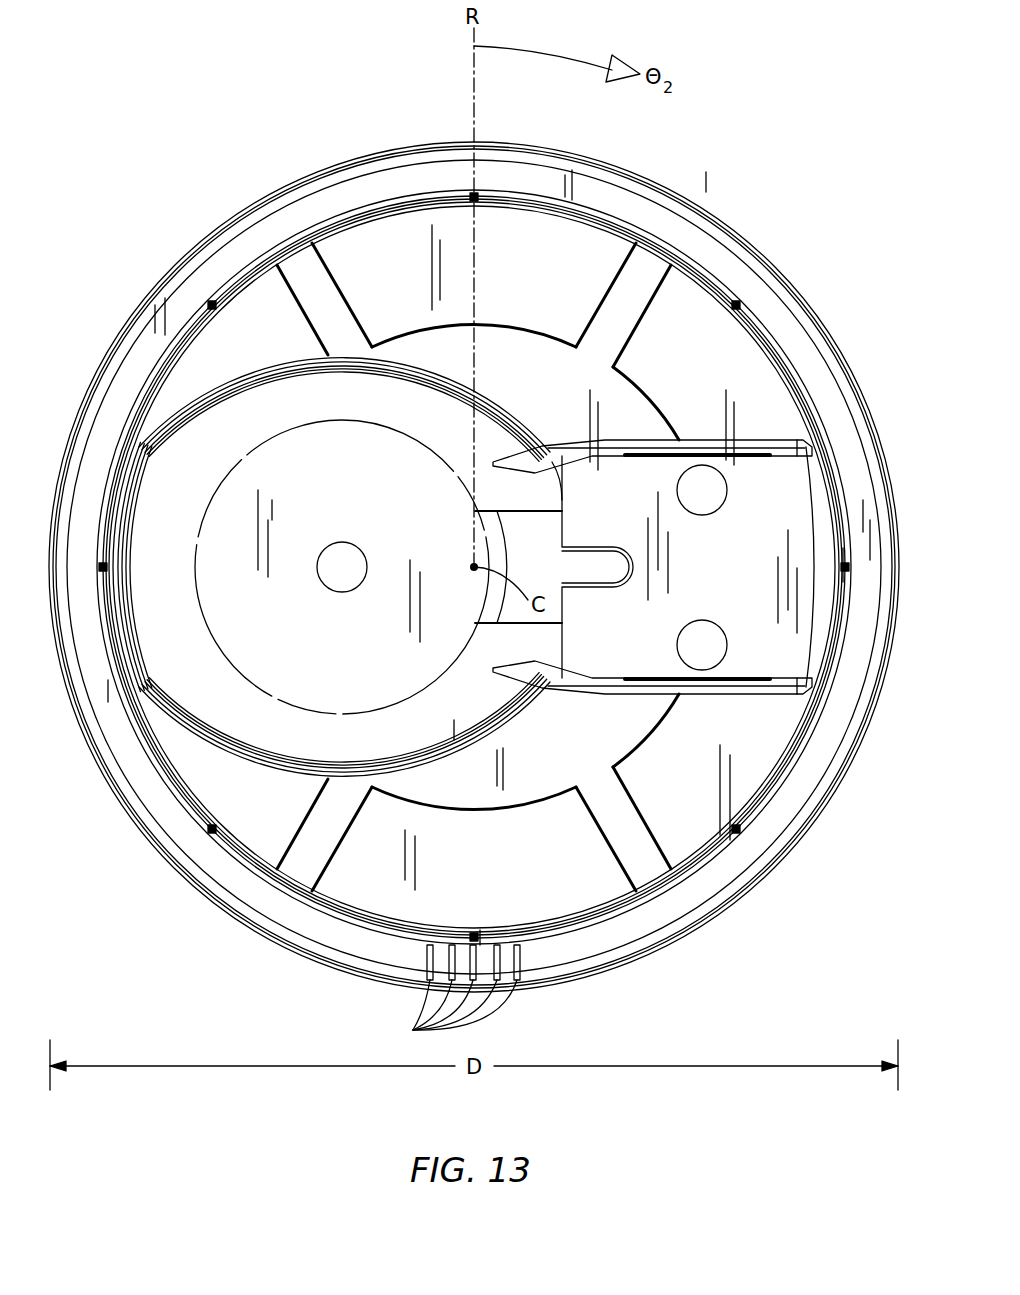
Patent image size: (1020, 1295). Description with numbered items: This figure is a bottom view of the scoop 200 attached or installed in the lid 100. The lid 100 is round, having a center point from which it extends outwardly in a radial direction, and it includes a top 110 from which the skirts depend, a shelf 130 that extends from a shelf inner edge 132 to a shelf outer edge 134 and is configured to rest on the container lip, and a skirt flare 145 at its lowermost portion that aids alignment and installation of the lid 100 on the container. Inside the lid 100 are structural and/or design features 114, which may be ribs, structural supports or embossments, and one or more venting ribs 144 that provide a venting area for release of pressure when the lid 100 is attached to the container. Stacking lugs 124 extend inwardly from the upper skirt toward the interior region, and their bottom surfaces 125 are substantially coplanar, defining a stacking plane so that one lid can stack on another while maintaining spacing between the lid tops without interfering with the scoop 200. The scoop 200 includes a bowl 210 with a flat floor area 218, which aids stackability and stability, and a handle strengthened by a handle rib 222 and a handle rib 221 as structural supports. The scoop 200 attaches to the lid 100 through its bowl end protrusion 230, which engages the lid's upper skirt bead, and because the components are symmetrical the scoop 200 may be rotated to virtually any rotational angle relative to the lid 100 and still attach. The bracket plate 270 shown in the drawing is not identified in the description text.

The lid 100 is at (108, 270).
The top 110 is at (727, 772).
The structural and/or design features 114 is at (342, 328).
The stacking lugs 124 is at (474, 567).
The stacking lug bottom surfaces 125 is at (218, 303).
The shelf 130 is at (788, 304).
The shelf inner edge 132 is at (732, 300).
The shelf outer edge 134 is at (816, 378).
The venting ribs 144 is at (443, 995).
The skirt flare 145 is at (598, 980).
The scoop 200 is at (318, 640).
The bowl 210 is at (318, 480).
The flat floor area 218 is at (338, 585).
The handle rib 221 is at (600, 680).
The handle rib 222 is at (607, 455).
The bowl end protrusion 230 is at (118, 550).
The bracket plate 270 is at (735, 588).